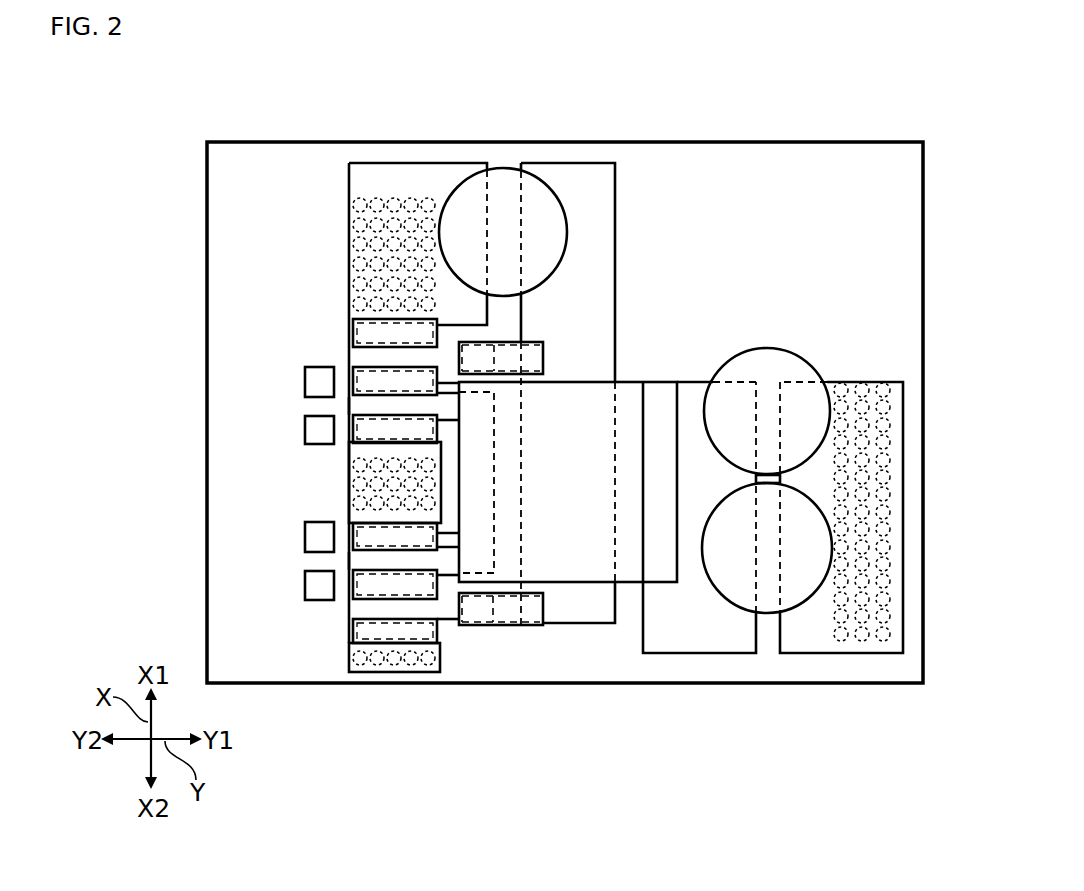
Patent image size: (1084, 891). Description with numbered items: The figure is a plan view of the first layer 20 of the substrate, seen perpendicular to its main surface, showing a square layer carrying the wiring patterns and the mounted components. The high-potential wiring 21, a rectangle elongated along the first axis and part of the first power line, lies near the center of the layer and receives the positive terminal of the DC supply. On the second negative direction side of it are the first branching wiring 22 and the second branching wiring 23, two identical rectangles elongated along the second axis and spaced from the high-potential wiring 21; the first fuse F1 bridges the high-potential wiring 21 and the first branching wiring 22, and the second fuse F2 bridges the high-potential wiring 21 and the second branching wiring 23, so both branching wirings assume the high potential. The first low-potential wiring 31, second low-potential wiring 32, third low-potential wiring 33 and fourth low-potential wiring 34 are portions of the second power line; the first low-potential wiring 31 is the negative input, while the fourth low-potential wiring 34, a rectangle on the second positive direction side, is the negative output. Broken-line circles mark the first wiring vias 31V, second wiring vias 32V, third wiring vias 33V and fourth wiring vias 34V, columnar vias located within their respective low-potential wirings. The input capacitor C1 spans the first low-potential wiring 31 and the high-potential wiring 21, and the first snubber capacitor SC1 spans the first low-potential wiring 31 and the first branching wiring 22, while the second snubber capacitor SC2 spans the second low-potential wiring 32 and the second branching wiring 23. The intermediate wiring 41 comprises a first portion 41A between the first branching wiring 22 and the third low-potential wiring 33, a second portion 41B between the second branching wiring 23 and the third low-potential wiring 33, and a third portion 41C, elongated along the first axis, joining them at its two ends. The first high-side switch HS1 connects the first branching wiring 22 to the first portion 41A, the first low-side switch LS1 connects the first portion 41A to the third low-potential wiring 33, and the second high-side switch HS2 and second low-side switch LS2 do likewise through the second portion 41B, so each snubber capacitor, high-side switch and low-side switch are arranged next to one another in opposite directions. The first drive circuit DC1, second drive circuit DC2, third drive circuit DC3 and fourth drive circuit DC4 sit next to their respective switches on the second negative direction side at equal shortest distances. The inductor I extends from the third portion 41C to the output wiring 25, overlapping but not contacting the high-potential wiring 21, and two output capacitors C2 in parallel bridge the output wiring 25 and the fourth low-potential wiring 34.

The first layer 20 is at (212, 138).
The high-potential wiring 21 is at (616, 178).
The first branching wiring 22 is at (349, 357).
The second branching wiring 23 is at (349, 608).
The output wiring 25 is at (700, 654).
The first low-potential wiring 31 is at (349, 178).
The first wiring vias 31V is at (391, 198).
The second low-potential wiring 32 is at (417, 673).
The second wiring vias 32V is at (377, 672).
The third low-potential wiring 33 is at (349, 453).
The third wiring vias 33V is at (352, 482).
The fourth low-potential wiring 34 is at (843, 654).
The fourth wiring vias 34V is at (883, 382).
The intermediate wiring 41 is at (494, 571).
The first portion 41A is at (349, 408).
The second portion 41B is at (349, 561).
The third portion 41C is at (494, 465).
The input capacitor C1 is at (503, 168).
The output capacitor C2 is at (767, 348).
The first fuse F1 is at (535, 343).
The second fuse F2 is at (508, 626).
The first high-side switch HS1 is at (459, 383).
The second high-side switch HS2 is at (425, 572).
The first low-side switch LS1 is at (437, 428).
The second low-side switch LS2 is at (459, 533).
The first snubber capacitor SC1 is at (353, 323).
The second snubber capacitor SC2 is at (349, 633).
The first drive circuit DC1 is at (305, 383).
The second drive circuit DC2 is at (305, 432).
The third drive circuit DC3 is at (305, 587).
The fourth drive circuit DC4 is at (305, 537).
The inductor I is at (628, 382).